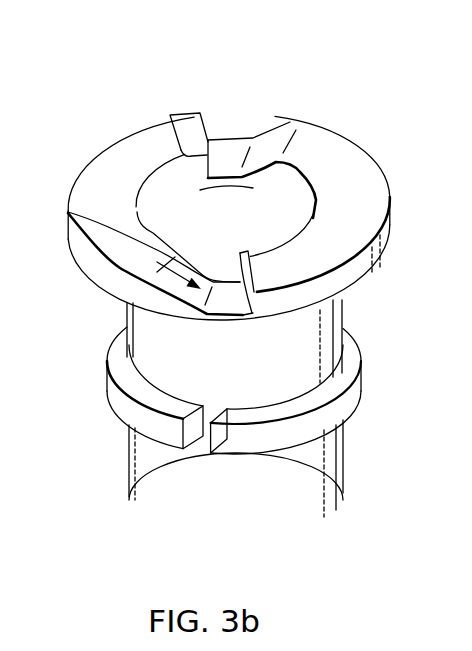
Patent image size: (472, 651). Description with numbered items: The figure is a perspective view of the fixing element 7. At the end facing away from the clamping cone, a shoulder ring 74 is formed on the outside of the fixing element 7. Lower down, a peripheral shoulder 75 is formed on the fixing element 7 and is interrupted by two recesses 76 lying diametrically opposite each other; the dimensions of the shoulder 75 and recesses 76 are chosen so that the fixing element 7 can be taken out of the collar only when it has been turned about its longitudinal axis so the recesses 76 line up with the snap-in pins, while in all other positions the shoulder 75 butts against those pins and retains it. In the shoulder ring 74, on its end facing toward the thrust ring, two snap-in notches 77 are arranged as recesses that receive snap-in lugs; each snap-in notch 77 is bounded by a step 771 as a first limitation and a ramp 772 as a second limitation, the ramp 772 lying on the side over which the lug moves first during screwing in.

The fixing element 7 is at (69, 102).
The shoulder ring 74 is at (383, 245).
The peripheral shoulder 75 is at (133, 415).
The recess 76 is at (202, 447).
The snap-in notch 77 is at (220, 114).
The step 771 is at (181, 150).
The ramp 772 is at (279, 137).